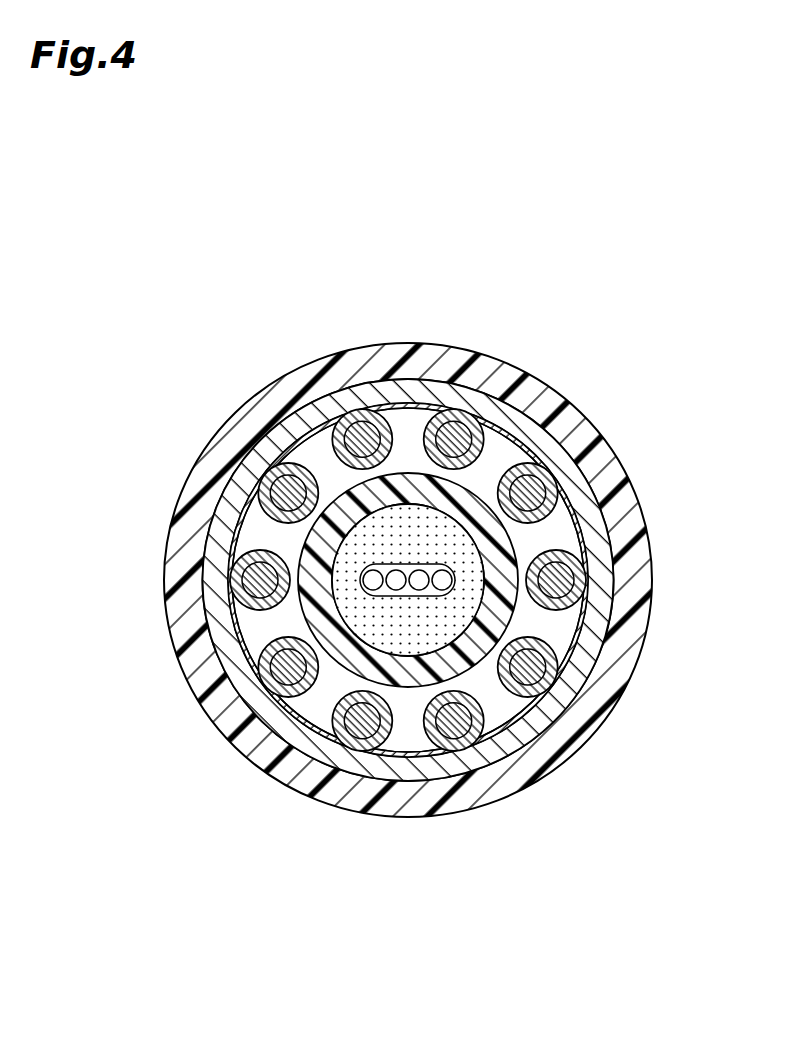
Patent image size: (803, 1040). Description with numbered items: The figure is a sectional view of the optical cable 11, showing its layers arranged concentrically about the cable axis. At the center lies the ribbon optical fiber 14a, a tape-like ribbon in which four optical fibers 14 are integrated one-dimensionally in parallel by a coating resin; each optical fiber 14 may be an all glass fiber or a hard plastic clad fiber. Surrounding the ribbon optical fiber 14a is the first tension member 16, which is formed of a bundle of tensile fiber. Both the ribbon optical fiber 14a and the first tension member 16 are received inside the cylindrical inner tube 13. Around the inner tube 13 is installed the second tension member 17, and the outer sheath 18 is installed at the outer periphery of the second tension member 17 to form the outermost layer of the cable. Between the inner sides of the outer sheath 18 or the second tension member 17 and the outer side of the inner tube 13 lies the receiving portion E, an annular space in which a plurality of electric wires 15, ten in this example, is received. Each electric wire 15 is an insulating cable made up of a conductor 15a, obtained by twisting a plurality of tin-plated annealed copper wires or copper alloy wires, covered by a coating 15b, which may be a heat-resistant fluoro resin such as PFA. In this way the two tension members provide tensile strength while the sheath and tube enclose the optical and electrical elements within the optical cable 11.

The optical cable 11 is at (497, 274).
The inner tube 13 is at (457, 490).
The optical fiber 14 is at (526, 580).
The ribbon optical fiber 14a is at (453, 583).
The electric wire 15 is at (461, 618).
The conductor 15a is at (537, 663).
The coating 15b is at (568, 706).
The first tension member 16 is at (405, 648).
The second tension member 17 is at (228, 648).
The outer sheath 18 is at (181, 576).
The receiving portion E is at (405, 413).